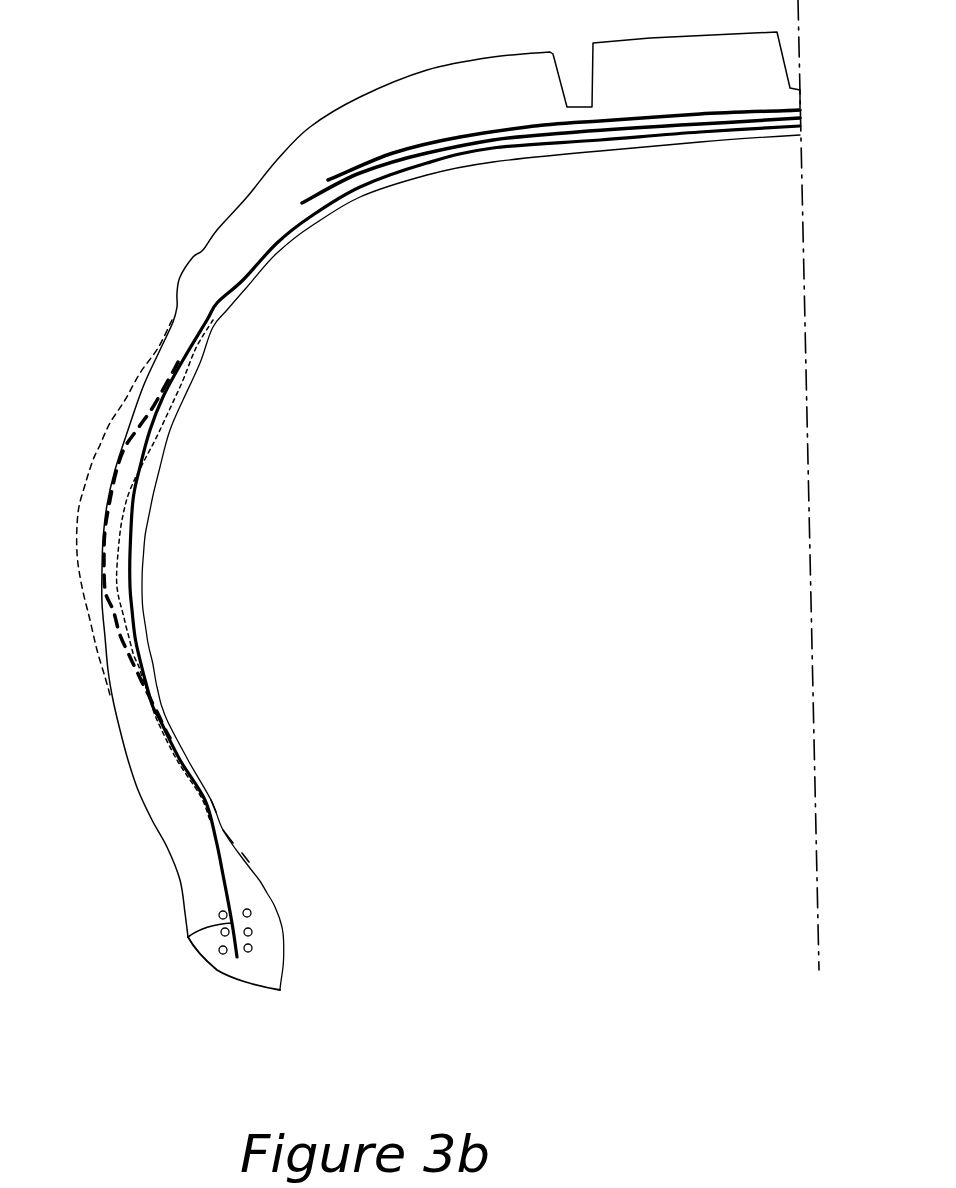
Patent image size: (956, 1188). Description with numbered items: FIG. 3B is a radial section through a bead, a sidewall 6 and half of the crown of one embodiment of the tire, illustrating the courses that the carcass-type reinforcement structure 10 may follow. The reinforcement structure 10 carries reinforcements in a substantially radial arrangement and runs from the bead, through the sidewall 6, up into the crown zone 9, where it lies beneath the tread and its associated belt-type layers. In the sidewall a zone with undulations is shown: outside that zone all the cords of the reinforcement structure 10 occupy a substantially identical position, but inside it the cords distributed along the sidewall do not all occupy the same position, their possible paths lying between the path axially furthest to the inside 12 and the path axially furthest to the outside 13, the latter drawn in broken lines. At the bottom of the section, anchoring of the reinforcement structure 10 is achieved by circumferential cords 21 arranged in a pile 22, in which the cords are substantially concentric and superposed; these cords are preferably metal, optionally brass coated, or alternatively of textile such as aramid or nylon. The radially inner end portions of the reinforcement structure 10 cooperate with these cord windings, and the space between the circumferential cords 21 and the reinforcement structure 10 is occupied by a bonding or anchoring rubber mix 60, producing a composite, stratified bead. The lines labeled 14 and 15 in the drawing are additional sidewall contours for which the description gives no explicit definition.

The crown zone 9 is at (508, 127).
The original sidewall contour 15 is at (112, 448).
The innerliner 14 is at (160, 430).
The reinforcement structure path axially furthest to the inside 12 is at (137, 487).
The sidewall 6 is at (127, 533).
The reinforcement structure path axially furthest to the outside 13 is at (110, 600).
The reinforcing structure 10 is at (200, 823).
The anchoring rubber mix 60 is at (188, 937).
The circumferential cords 21 is at (249, 910).
The pile 22 is at (252, 973).